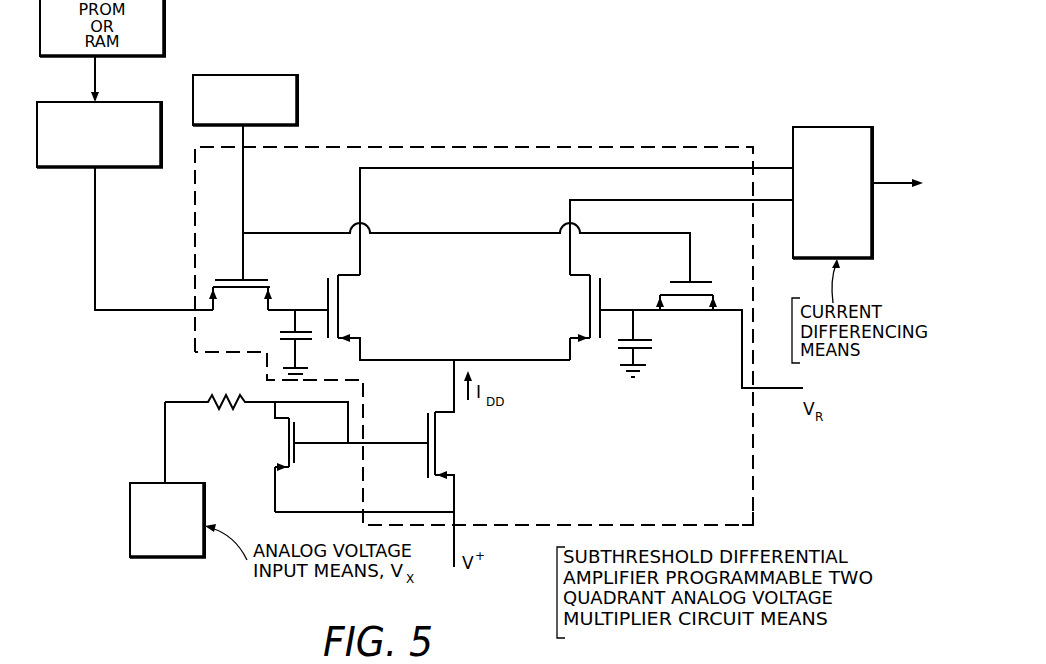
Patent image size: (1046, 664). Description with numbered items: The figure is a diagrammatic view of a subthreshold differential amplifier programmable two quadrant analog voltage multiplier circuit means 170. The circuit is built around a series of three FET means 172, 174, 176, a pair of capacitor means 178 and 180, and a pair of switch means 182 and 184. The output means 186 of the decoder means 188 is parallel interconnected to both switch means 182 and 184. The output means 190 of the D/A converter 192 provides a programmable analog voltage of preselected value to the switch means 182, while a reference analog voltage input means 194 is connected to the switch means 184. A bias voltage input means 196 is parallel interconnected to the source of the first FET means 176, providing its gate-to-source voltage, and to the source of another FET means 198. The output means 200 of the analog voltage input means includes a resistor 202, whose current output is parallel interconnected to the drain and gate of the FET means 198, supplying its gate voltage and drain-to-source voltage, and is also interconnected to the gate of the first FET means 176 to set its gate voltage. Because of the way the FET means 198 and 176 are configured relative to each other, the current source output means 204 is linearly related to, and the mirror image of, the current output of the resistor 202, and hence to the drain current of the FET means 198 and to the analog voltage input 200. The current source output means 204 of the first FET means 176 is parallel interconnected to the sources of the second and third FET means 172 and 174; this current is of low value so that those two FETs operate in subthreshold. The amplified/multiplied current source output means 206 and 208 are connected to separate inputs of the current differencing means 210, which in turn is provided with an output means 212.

The subthreshold differential amplifier programmable two quadrant analog voltage mul 170 is at (760, 496).
The second FET means 172 is at (343, 317).
The third FET means 174 is at (585, 306).
The first FET means 176 is at (455, 456).
The capacitor means 178 is at (280, 333).
The capacitor means 180 is at (651, 341).
The switch means 182 is at (278, 284).
The switch means 184 is at (718, 288).
The output means of decoder means 186 is at (243, 190).
The decoder means 188 is at (298, 102).
The output means of D/A converter 190 is at (95, 228).
The D/A converter 192 is at (68, 168).
The reference analog voltage input means 194 is at (742, 382).
The bias voltage input means 196 is at (458, 518).
The FET means 198 is at (280, 450).
The output means of analog voltage input means 200 is at (165, 455).
The resistor 202 is at (228, 392).
The current source output means 204 is at (454, 383).
The amplified/multiplied current source output means 206 is at (360, 200).
The amplified/multiplied current source output means 208 is at (568, 212).
The current differencing means 210 is at (849, 196).
The output means 212 is at (893, 182).